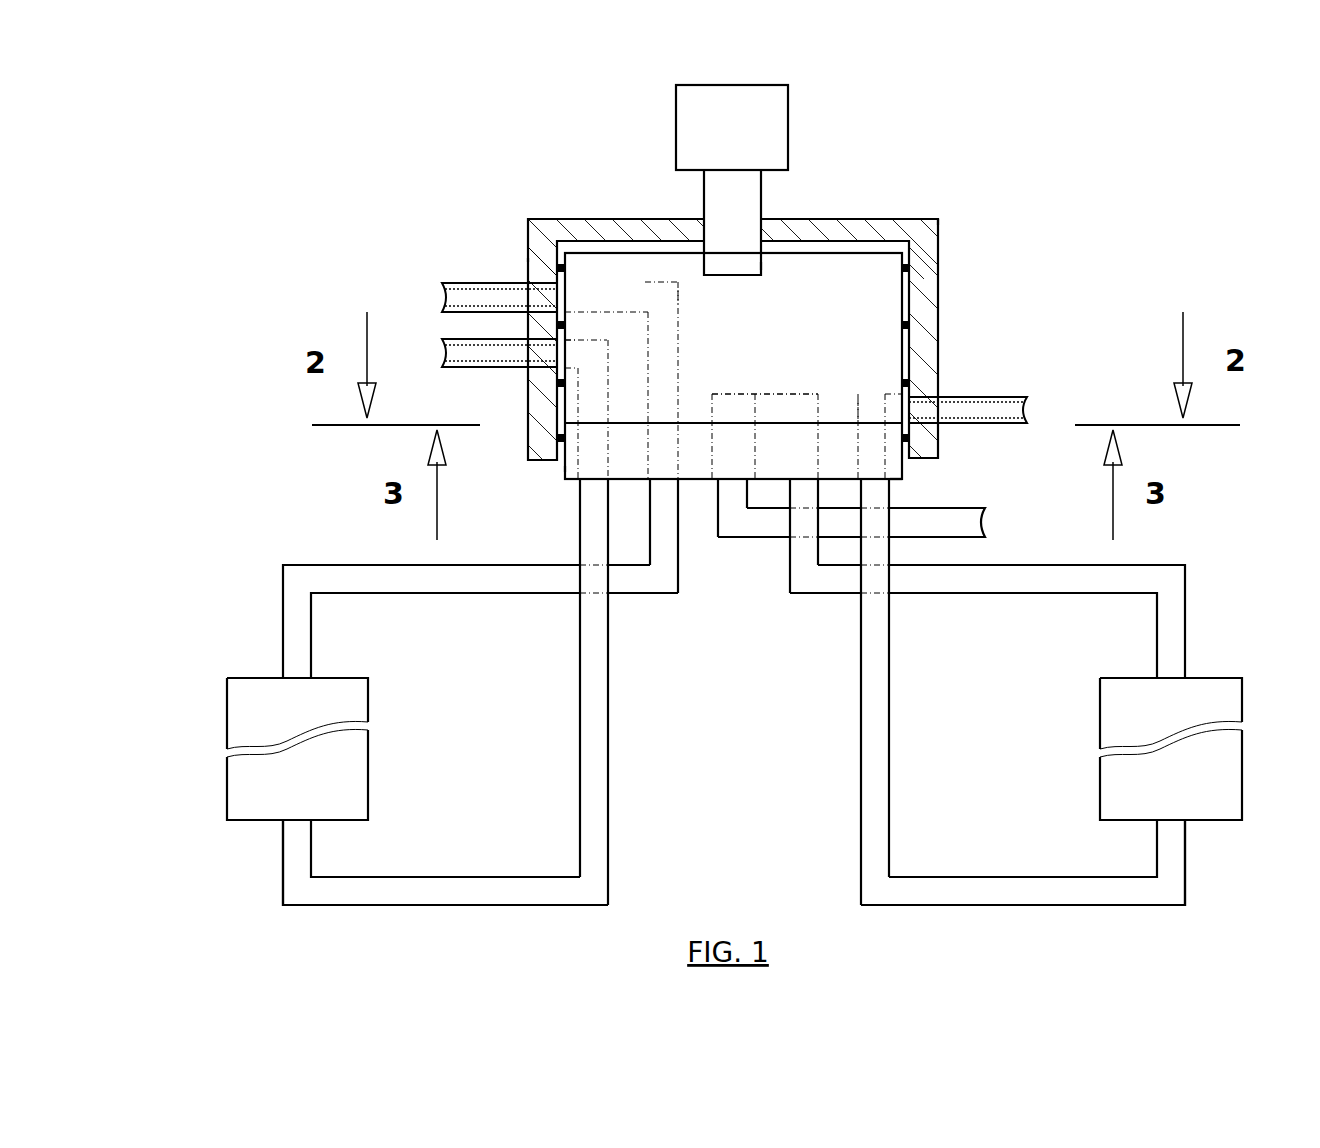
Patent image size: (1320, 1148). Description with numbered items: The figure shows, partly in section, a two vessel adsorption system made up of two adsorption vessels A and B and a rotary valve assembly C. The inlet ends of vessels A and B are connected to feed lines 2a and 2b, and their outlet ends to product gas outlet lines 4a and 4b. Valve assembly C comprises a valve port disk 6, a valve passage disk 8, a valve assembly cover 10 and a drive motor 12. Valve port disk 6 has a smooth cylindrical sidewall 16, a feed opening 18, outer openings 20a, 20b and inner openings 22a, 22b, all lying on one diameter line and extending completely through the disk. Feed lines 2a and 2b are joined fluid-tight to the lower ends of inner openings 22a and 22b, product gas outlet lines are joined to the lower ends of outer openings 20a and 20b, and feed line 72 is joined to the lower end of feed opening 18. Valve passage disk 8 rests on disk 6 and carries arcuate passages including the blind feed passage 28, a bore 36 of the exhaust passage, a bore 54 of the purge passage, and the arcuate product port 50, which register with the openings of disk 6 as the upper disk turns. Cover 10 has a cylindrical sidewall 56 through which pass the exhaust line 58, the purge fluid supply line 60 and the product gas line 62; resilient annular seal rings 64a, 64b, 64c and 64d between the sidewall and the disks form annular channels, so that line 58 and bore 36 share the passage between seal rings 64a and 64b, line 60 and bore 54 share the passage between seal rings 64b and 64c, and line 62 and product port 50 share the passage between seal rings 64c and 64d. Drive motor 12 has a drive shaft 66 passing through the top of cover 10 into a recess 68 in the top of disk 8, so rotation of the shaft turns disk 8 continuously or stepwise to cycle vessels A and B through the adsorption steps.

The drive motor 12 is at (732, 127).
The drive shaft 66 is at (732, 222).
The valve assembly cover 10 is at (597, 240).
The valve passage disk 8 is at (657, 257).
The cylindrical sidewall 56 is at (528, 258).
The exhaust line 58 is at (478, 290).
The purge fluid supply line 60 is at (497, 370).
The product gas line 62 is at (960, 397).
The valve port disk 6 is at (565, 469).
The resilient annular seal ring 64a is at (908, 268).
The resilient annular seal ring 64b is at (908, 325).
The resilient annular seal ring 64c is at (908, 383).
The resilient annular seal ring 64d is at (908, 438).
The recess 68 is at (765, 265).
The bore 36 is at (660, 297).
The bore 54 is at (577, 355).
The outer opening 20b is at (868, 450).
The arcuate product port 50 is at (875, 408).
The blind feed passage 28 is at (765, 404).
The outer opening 20a is at (595, 470).
The inner opening 22a is at (663, 463).
The feed opening 18 is at (732, 470).
The inner opening 22b is at (798, 463).
The cylindrical sidewall 16 is at (902, 470).
The feed line 72 is at (983, 498).
The feed line 2a is at (311, 634).
The feed line 2b is at (1157, 650).
The product gas outlet line 4a is at (283, 855).
The product gas outlet line 4b is at (1185, 875).
The adsorption vessel A is at (297, 749).
The adsorption vessel B is at (1171, 749).
The rotary valve assembly C is at (985, 186).